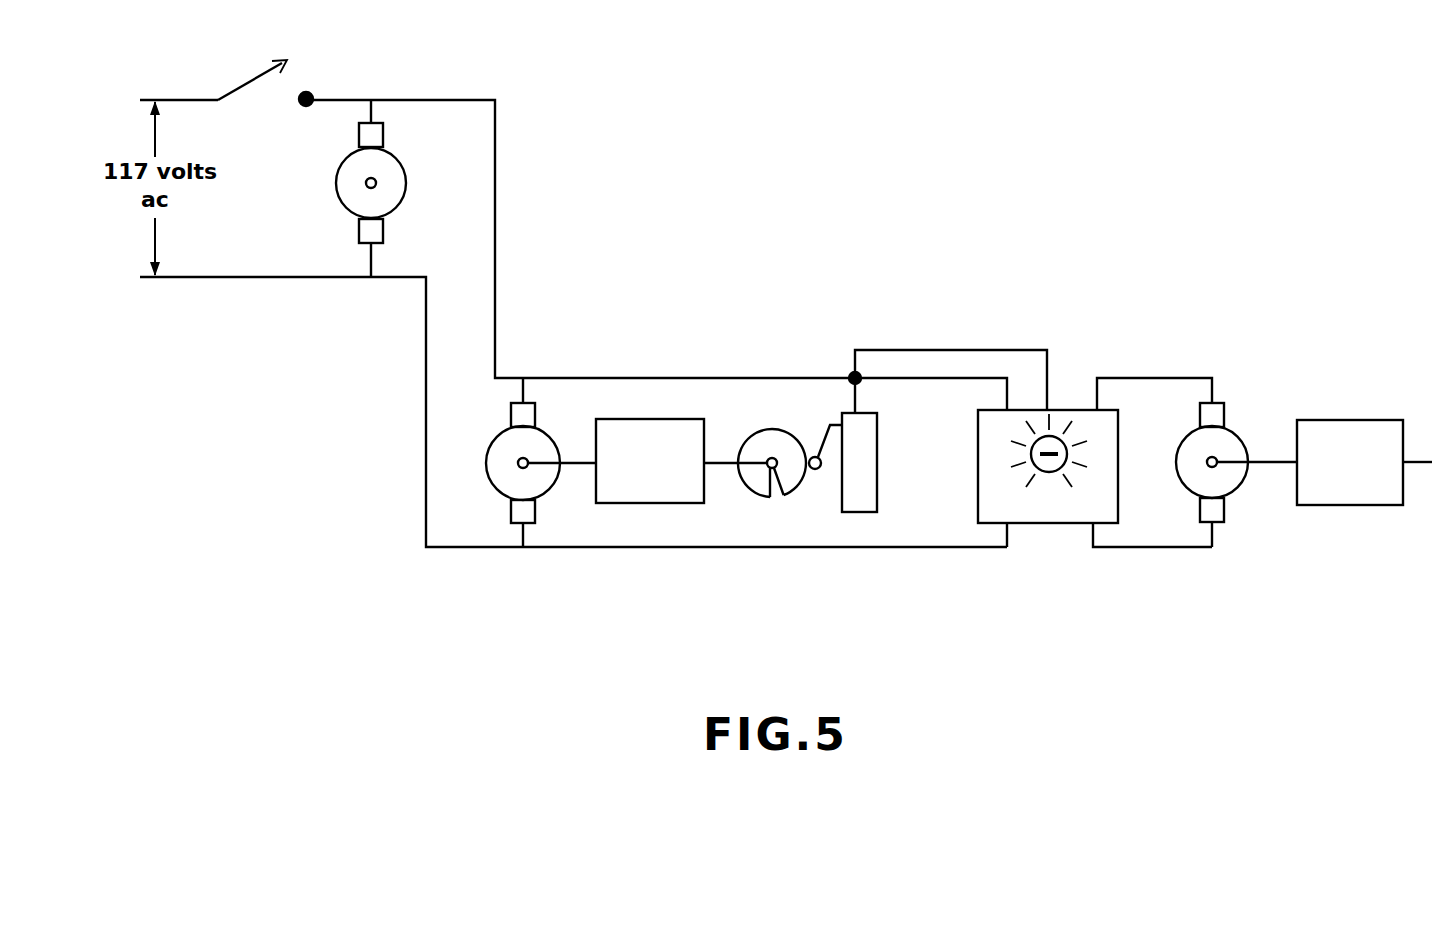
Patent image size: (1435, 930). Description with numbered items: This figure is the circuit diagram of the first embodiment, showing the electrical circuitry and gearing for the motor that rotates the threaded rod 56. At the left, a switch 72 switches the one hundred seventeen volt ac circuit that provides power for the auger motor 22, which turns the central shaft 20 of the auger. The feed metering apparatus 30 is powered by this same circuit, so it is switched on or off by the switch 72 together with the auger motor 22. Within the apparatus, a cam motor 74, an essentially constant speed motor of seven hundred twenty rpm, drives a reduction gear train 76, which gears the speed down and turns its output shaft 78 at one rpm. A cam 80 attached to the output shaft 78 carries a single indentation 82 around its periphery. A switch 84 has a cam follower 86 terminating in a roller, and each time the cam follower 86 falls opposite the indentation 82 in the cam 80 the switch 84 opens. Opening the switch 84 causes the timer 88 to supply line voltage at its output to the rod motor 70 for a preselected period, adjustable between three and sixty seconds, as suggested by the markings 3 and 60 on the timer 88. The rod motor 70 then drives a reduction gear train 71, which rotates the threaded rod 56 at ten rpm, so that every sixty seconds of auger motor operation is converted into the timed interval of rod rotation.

The switch 72 is at (242, 78).
The auger motor 22 is at (429, 166).
The central shaft 20 is at (378, 183).
The cam motor 74 is at (478, 478).
The reduction gear train 76 is at (645, 413).
The output shaft 78 is at (722, 470).
The cam 80 is at (782, 459).
The indentation 82 is at (777, 503).
The cam follower 86 is at (817, 427).
The switch 84 is at (868, 513).
The feed metering apparatus 30 is at (907, 340).
The timer 88 is at (1057, 406).
The indicator lamp 3 is at (1036, 477).
The indicator 60 is at (1055, 466).
The rod motor 70 is at (1235, 430).
The reduction gear train 71 is at (1333, 507).
The threaded rod 56 is at (1428, 468).